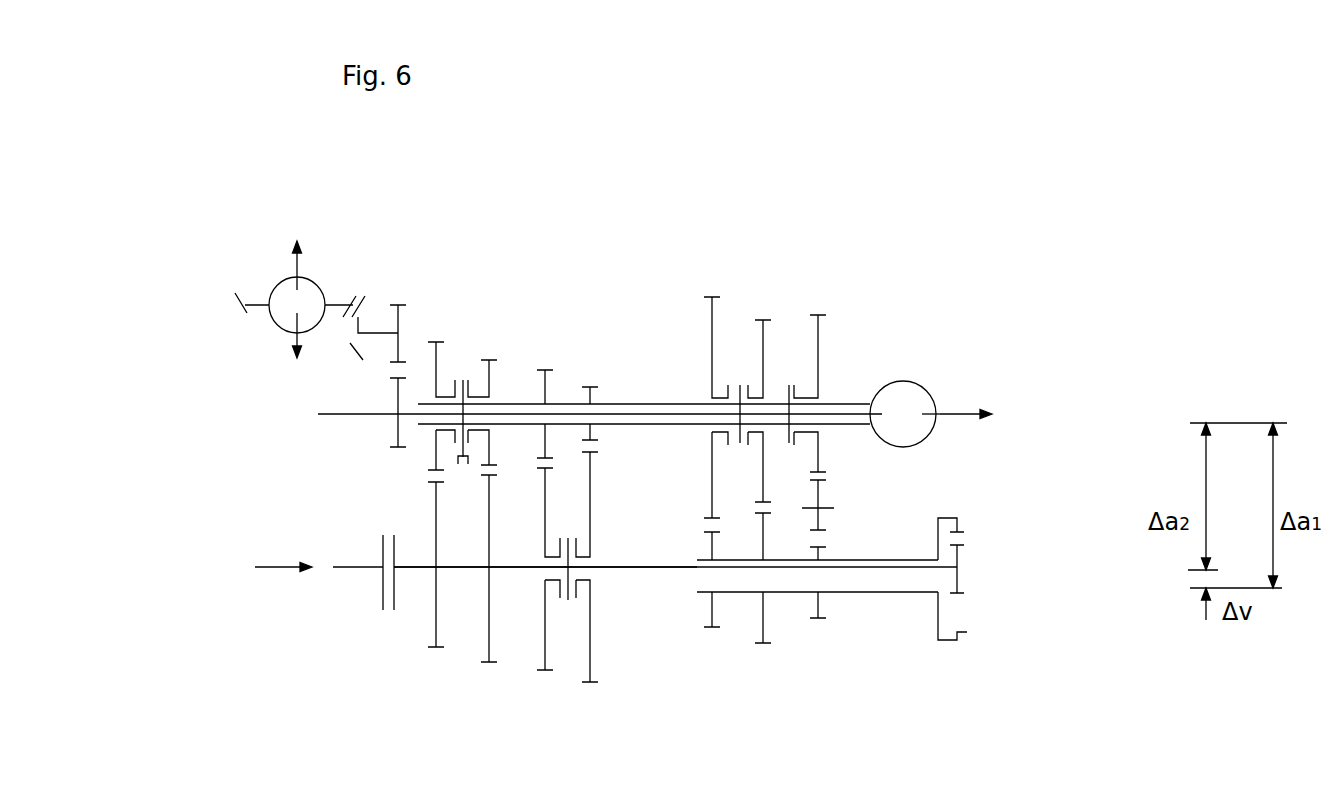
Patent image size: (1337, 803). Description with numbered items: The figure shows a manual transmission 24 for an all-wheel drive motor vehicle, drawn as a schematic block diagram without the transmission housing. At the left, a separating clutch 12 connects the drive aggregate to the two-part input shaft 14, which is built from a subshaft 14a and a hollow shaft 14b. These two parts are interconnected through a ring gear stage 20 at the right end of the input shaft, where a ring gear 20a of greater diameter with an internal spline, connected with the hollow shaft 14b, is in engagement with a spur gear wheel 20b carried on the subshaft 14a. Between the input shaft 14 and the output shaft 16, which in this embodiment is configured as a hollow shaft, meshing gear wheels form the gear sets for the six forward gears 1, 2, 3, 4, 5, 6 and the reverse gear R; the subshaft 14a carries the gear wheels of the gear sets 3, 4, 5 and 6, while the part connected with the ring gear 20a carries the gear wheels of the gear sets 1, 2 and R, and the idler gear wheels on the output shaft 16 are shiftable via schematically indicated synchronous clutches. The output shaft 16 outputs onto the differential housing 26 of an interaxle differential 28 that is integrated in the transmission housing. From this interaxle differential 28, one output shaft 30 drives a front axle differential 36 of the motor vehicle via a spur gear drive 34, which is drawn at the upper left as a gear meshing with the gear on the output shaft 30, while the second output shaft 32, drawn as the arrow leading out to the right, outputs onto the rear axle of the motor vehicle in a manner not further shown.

The separating clutch 12 is at (378, 587).
The input shaft 14 is at (648, 582).
The subshaft 14a is at (423, 567).
The hollow shaft 14b is at (867, 592).
The output shaft 16 is at (653, 403).
The ring gear stage 20 is at (948, 652).
The ring gear 20a is at (948, 517).
The spur gear wheel 20b is at (958, 578).
The transmission 24 is at (942, 200).
The differential housing 26 is at (885, 387).
The interaxle differential 28 is at (915, 374).
The output shaft 30 is at (413, 407).
The second output shaft 32 is at (957, 414).
The spur gear drive 34 is at (397, 294).
The front axle differential 36 is at (266, 275).
The gear set for first forward gear 1 is at (716, 520).
The gear set for second forward gear 2 is at (760, 531).
The gear set for third forward gear 3 is at (441, 542).
The gear set for fourth forward gear 4 is at (483, 551).
The gear set for fifth forward gear 5 is at (546, 556).
The gear set for sixth forward gear 6 is at (587, 565).
The reverse gear R is at (814, 529).